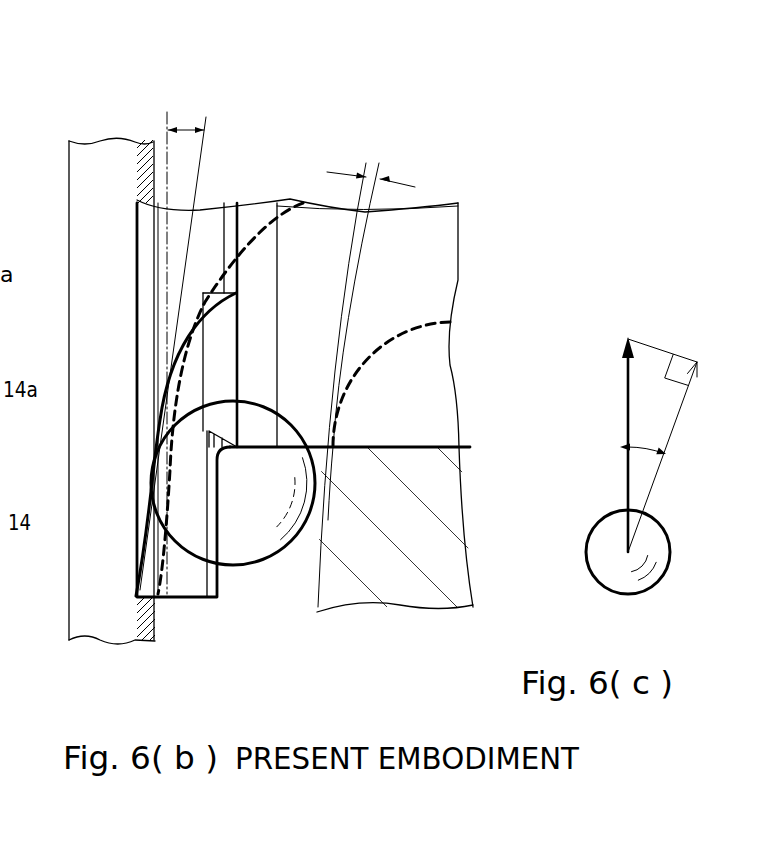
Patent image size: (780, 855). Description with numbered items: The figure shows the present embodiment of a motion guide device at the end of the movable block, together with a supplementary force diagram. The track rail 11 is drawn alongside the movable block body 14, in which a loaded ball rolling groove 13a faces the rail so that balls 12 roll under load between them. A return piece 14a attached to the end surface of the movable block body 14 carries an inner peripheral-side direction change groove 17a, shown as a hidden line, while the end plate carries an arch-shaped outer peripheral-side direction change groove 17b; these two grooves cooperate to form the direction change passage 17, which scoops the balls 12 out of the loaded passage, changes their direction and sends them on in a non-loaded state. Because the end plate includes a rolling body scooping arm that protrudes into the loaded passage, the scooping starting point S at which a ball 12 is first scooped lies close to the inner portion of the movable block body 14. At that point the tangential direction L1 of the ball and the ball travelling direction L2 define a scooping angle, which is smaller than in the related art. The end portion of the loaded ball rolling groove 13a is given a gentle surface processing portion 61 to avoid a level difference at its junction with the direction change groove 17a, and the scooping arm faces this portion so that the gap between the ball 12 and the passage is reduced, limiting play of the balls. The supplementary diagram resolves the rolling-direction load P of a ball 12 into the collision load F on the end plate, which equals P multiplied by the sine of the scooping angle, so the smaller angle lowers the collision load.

In FIG. 6B, the track rail 11 is at (112, 160).
In FIG. 6B, the direction change passage 17 is at (412, 245).
In FIG. 6B, the inner peripheral-side direction change groove 17a is at (418, 322).
In FIG. 6B, the outer peripheral-side direction change groove 17b is at (255, 240).
In FIG. 6B, the return piece 14a is at (410, 383).
In FIG. 6B, the movable block body 14 is at (433, 530).
In FIG. 6B, the ball 12 is at (240, 533).
In FIG. 6B, the loaded ball rolling groove 13a is at (292, 572).
In FIG. 6B, the gentle surface processing portion 61 is at (320, 507).
In FIG. 6B, the scooping starting point S is at (168, 475).
In FIG. 6B, the tangential direction of the ball L1 is at (166, 138).
In FIG. 6B, the ball travelling direction L2 is at (203, 153).
In FIG. 6C, the load in the rolling direction of the ball P is at (625, 406).
In FIG. 6C, the collision load F is at (663, 352).